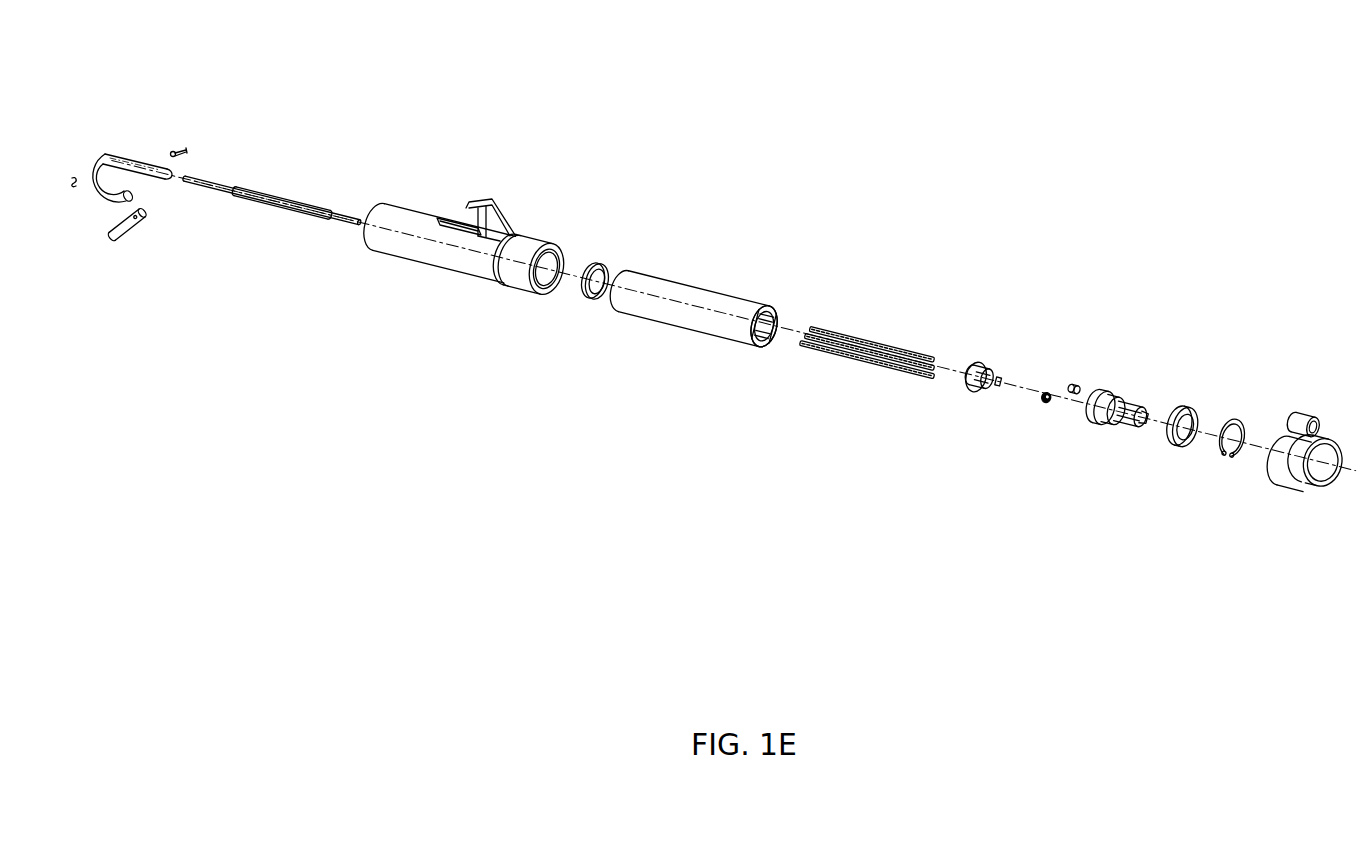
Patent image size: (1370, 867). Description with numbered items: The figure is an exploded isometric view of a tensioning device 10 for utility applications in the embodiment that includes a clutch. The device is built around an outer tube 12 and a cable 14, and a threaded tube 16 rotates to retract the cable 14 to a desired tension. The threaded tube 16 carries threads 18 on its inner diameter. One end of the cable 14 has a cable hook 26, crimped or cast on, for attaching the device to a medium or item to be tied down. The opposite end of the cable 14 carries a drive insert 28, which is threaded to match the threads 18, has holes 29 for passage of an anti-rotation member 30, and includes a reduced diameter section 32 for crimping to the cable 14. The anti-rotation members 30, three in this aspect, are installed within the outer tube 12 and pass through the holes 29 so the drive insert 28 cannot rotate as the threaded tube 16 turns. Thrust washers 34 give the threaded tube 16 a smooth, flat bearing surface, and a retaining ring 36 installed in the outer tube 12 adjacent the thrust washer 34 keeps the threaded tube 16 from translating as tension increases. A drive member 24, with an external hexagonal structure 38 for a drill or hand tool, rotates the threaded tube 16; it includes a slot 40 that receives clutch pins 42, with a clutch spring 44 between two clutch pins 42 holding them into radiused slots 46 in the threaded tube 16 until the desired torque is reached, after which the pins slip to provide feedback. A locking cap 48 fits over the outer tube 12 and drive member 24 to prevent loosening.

The tensioning device 10 is at (771, 128).
The outer tube 12 is at (428, 212).
The cable 14 is at (291, 202).
The threaded tube 16 is at (690, 292).
The threads 18 is at (780, 320).
The drive member 24 is at (1133, 402).
The cable hook 26 is at (143, 162).
The drive insert 28 is at (982, 395).
The holes 29 is at (983, 370).
The anti-rotation member 30 is at (897, 348).
The reduced diameter section 32 is at (1000, 373).
The thrust washer 34 is at (596, 267).
The retaining ring 36 is at (1243, 423).
The external hexagonal structure 38 is at (1122, 430).
The slot 40 is at (1093, 413).
The clutch pin 42 is at (1077, 383).
The clutch spring 44 is at (1045, 402).
The radiused slots 46 is at (782, 312).
The locking cap 48 is at (1310, 490).